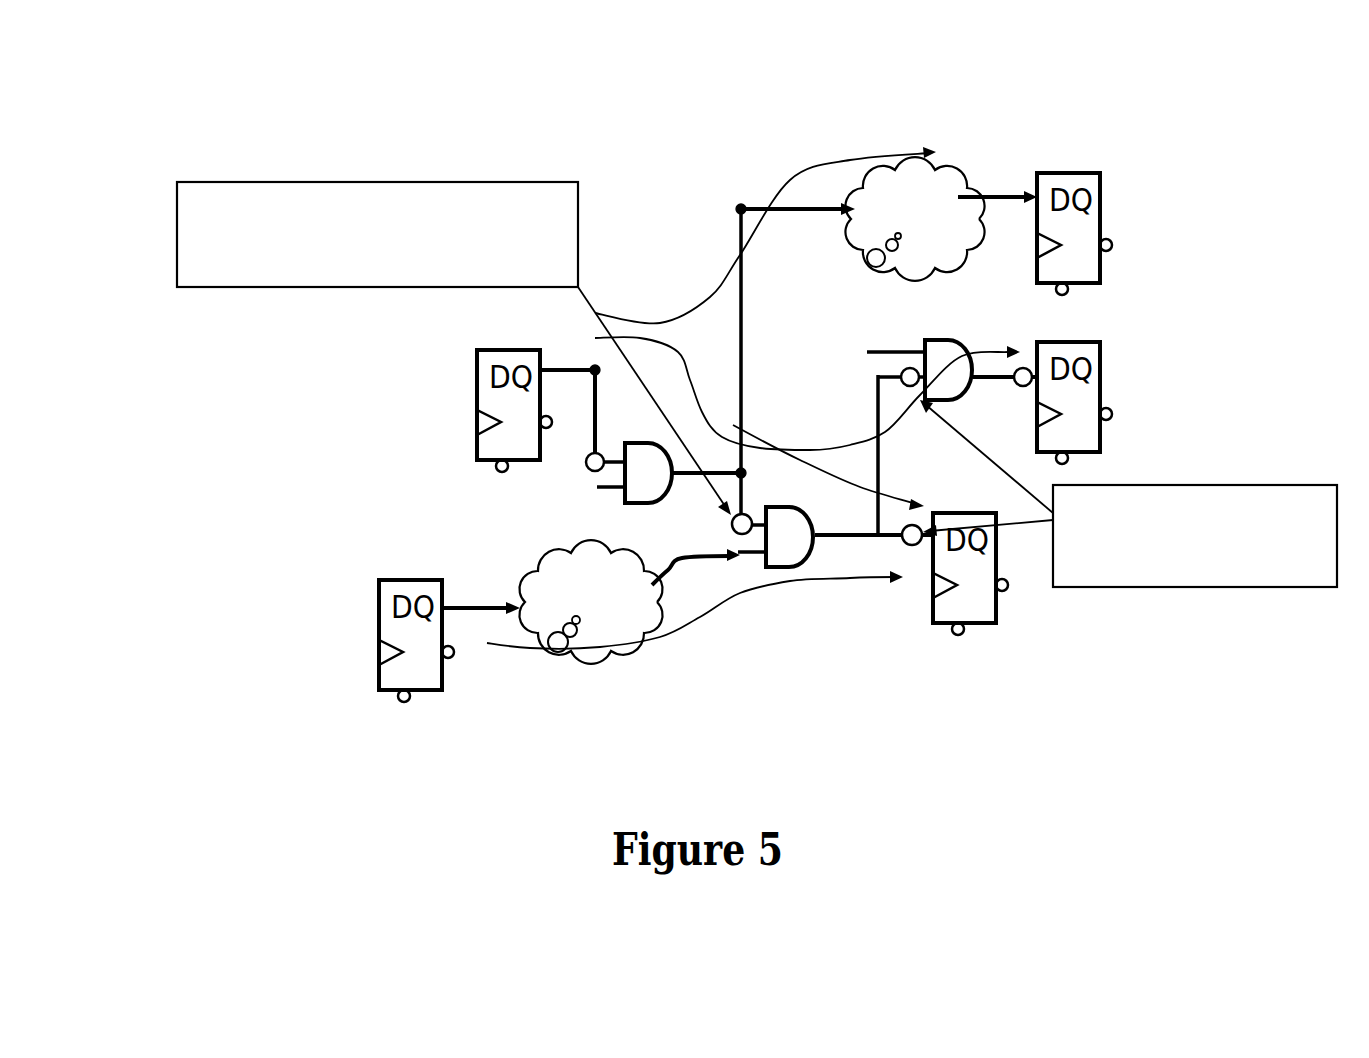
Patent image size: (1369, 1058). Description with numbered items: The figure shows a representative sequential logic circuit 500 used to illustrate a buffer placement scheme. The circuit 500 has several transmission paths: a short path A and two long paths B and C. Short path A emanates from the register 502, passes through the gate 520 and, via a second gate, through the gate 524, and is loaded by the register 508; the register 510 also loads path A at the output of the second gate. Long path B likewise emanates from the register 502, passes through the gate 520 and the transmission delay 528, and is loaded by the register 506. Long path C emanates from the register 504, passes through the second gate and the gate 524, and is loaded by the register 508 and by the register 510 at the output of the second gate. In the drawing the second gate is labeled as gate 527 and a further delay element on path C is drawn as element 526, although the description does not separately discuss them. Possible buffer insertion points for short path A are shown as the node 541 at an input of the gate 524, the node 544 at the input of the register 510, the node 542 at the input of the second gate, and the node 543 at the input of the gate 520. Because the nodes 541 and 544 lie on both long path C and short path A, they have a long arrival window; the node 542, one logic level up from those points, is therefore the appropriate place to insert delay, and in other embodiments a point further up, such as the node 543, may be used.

The sequential logic circuit 500 is at (536, 62).
The register 502 is at (507, 336).
The register 504 is at (411, 588).
The register 506 is at (1072, 173).
The register 508 is at (1080, 343).
The register 510 is at (976, 504).
The gate 520 is at (665, 500).
The gate 524 is at (955, 331).
The combinational logic cloud 526 is at (605, 604).
The AND gate 527 is at (808, 500).
The transmission delay 528 is at (932, 230).
The node 541 is at (902, 369).
The node 542 is at (732, 530).
The node 543 is at (604, 452).
The node 544 is at (912, 550).